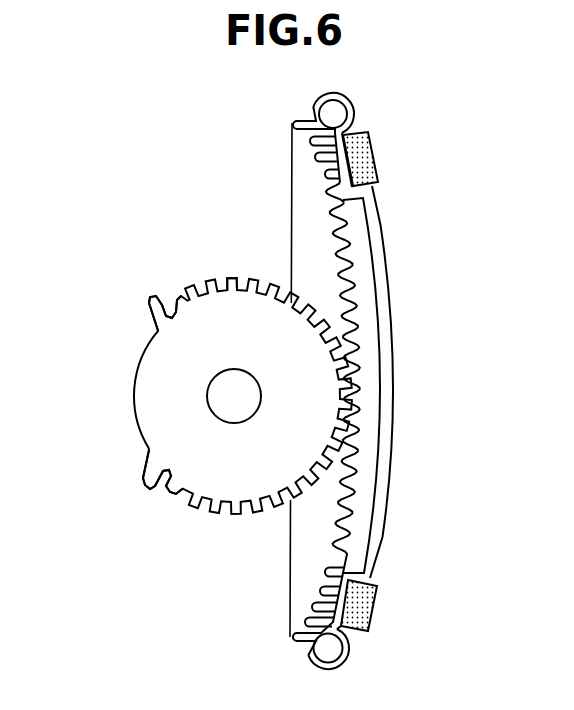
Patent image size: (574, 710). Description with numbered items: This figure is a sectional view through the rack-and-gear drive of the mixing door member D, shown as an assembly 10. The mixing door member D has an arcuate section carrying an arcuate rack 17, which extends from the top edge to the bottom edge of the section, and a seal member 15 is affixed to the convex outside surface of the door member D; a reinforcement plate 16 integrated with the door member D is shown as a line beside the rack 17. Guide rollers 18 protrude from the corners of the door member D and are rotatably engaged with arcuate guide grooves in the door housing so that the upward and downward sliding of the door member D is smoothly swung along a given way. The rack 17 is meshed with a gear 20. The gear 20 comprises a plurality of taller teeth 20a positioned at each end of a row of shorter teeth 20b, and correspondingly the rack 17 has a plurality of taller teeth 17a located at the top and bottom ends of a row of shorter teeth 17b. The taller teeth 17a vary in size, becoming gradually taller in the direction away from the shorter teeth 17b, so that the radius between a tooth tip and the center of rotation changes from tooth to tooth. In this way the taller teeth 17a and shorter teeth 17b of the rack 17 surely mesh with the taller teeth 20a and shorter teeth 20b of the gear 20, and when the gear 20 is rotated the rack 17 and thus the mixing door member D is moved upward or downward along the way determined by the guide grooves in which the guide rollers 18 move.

The rack and pinion mechanism 10 is at (479, 399).
The seal member 15 is at (378, 156).
The reinforcement plate 16 is at (300, 194).
The arcuate rack 17 is at (378, 460).
The taller teeth 17a is at (327, 173).
The shorter teeth 17b is at (353, 266).
The guide roller 18 is at (335, 116).
The gear 20 is at (135, 393).
The taller teeth 20a is at (170, 300).
The shorter teeth 20b is at (249, 278).
The mixing door member D is at (391, 317).